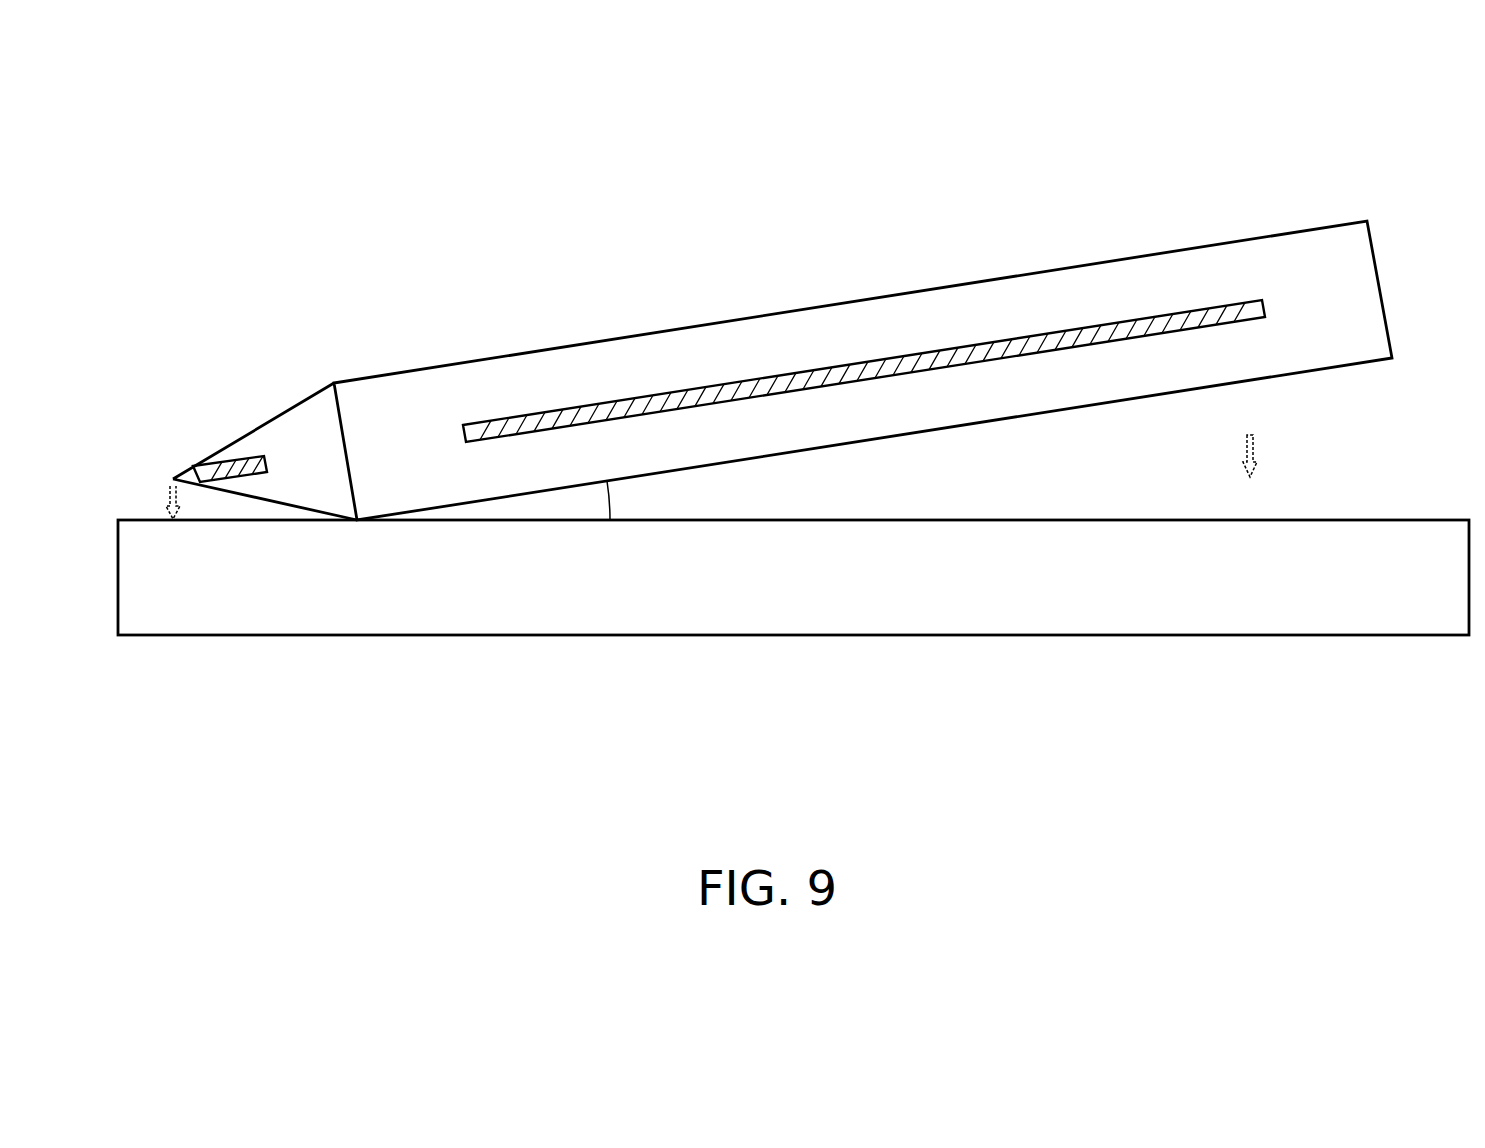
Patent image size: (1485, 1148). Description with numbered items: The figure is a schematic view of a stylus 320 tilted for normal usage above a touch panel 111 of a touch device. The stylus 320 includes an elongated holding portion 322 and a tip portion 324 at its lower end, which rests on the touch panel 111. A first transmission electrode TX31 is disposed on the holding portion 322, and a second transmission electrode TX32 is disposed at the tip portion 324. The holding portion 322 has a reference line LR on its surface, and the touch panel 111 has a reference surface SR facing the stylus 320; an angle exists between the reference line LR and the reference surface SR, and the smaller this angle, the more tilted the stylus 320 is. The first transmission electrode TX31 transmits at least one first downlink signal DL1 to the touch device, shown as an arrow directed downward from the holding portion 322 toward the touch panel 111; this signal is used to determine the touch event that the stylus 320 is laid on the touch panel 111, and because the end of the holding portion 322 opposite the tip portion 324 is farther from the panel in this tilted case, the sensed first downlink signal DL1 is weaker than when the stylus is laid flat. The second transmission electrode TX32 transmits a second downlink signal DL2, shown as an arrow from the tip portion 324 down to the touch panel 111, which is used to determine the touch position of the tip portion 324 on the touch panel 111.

The touch panel 111 is at (793, 637).
The stylus 320 is at (288, 100).
The holding portion 322 is at (1110, 260).
The tip portion 324 is at (173, 477).
The first transmission electrode TX31 is at (862, 363).
The second transmission electrode TX32 is at (233, 458).
The first downlink signal DL1 is at (1257, 440).
The second downlink signal DL2 is at (170, 485).
The reference line LR is at (983, 425).
The reference surface SR is at (990, 518).